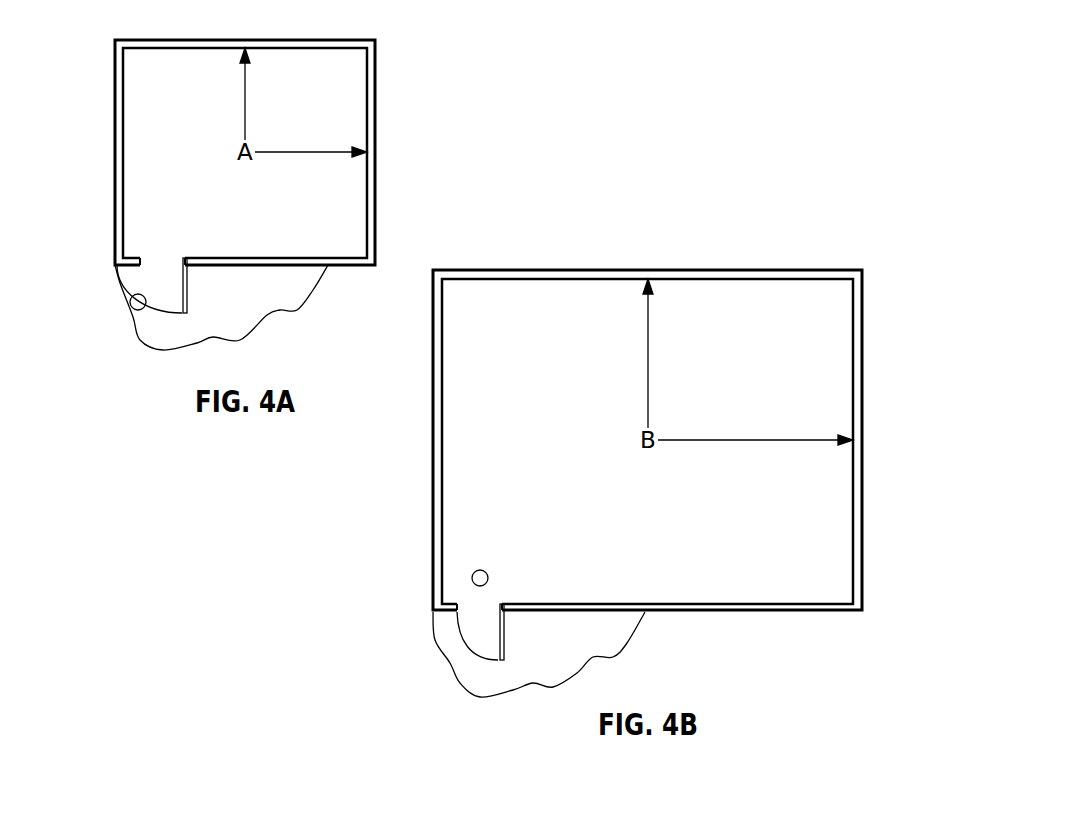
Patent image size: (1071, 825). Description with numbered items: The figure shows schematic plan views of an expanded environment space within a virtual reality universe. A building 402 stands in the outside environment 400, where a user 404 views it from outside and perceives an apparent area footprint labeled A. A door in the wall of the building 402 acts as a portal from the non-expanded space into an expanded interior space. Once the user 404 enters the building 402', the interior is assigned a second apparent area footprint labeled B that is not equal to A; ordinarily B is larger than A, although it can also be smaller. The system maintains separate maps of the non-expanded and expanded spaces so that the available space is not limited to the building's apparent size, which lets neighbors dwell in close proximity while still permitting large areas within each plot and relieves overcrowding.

In FIG. 4A, the outside environment 400 is at (293, 285).
In FIG. 4B, the outside environment 400 is at (610, 635).
In FIG. 4A, the building 402 is at (285, 152).
In FIG. 4B, the building (expanded interior) 402' is at (690, 440).
In FIG. 4A, the user 404 is at (130, 300).
In FIG. 4B, the user 404 is at (472, 578).